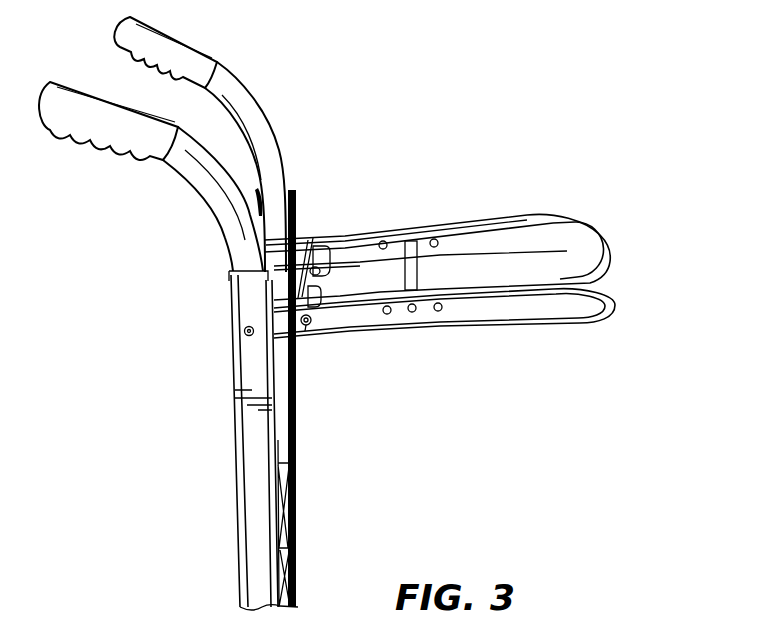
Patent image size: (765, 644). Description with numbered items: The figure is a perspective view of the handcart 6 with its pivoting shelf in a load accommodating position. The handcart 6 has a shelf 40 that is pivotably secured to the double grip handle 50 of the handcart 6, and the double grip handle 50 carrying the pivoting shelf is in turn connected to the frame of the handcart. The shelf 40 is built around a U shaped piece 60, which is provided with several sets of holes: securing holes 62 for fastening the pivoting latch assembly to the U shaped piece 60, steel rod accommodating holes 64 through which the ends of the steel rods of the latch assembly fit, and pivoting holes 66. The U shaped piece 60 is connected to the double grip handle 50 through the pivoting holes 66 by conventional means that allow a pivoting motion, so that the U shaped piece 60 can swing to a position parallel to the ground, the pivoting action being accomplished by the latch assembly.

The handcart 6 is at (286, 160).
The shelf 40 is at (443, 291).
The double grip handle 50 is at (235, 86).
The U shaped piece 60 is at (553, 217).
The securing holes 62 is at (383, 240).
The steel rod accommodating holes 64 is at (326, 365).
The pivoting holes 66 is at (248, 336).